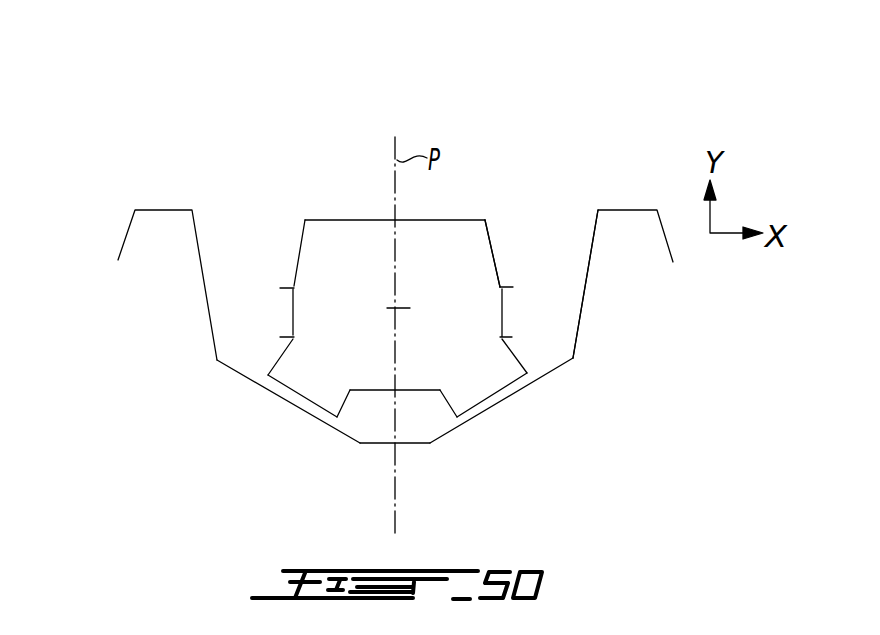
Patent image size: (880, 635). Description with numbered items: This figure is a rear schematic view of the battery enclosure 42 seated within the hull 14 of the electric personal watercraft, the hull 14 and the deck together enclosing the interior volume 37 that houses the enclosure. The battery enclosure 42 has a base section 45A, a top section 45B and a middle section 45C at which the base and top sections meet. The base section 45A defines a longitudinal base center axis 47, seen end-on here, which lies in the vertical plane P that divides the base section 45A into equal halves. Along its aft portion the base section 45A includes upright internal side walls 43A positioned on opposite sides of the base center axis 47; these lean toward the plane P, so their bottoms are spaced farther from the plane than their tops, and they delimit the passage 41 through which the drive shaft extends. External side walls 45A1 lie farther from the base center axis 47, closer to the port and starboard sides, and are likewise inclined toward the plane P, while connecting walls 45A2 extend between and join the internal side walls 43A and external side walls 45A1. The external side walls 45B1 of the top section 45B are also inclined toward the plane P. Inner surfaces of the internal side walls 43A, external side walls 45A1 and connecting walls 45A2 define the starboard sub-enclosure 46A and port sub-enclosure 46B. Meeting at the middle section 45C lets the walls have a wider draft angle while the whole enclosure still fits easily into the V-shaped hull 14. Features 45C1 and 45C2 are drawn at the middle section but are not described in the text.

The hull 14 is at (395, 370).
The interior volume 37 is at (574, 285).
The passage 41 is at (418, 421).
The battery enclosure 42 is at (326, 203).
The internal side walls 43A is at (338, 407).
The base section 45A is at (389, 420).
The external side walls 45A1 is at (278, 368).
The connecting walls 45A2 is at (296, 401).
The top section 45B is at (497, 205).
The external side walls of the top section 45B1 is at (300, 241).
The middle section 45C is at (521, 310).
The third side surface vertical portion 45C1 is at (290, 310).
The third side surface step 45C2 is at (289, 287).
The starboard sub-enclosure 46A is at (498, 384).
The port sub-enclosure 46B is at (319, 400).
The base center axis 47 is at (397, 307).